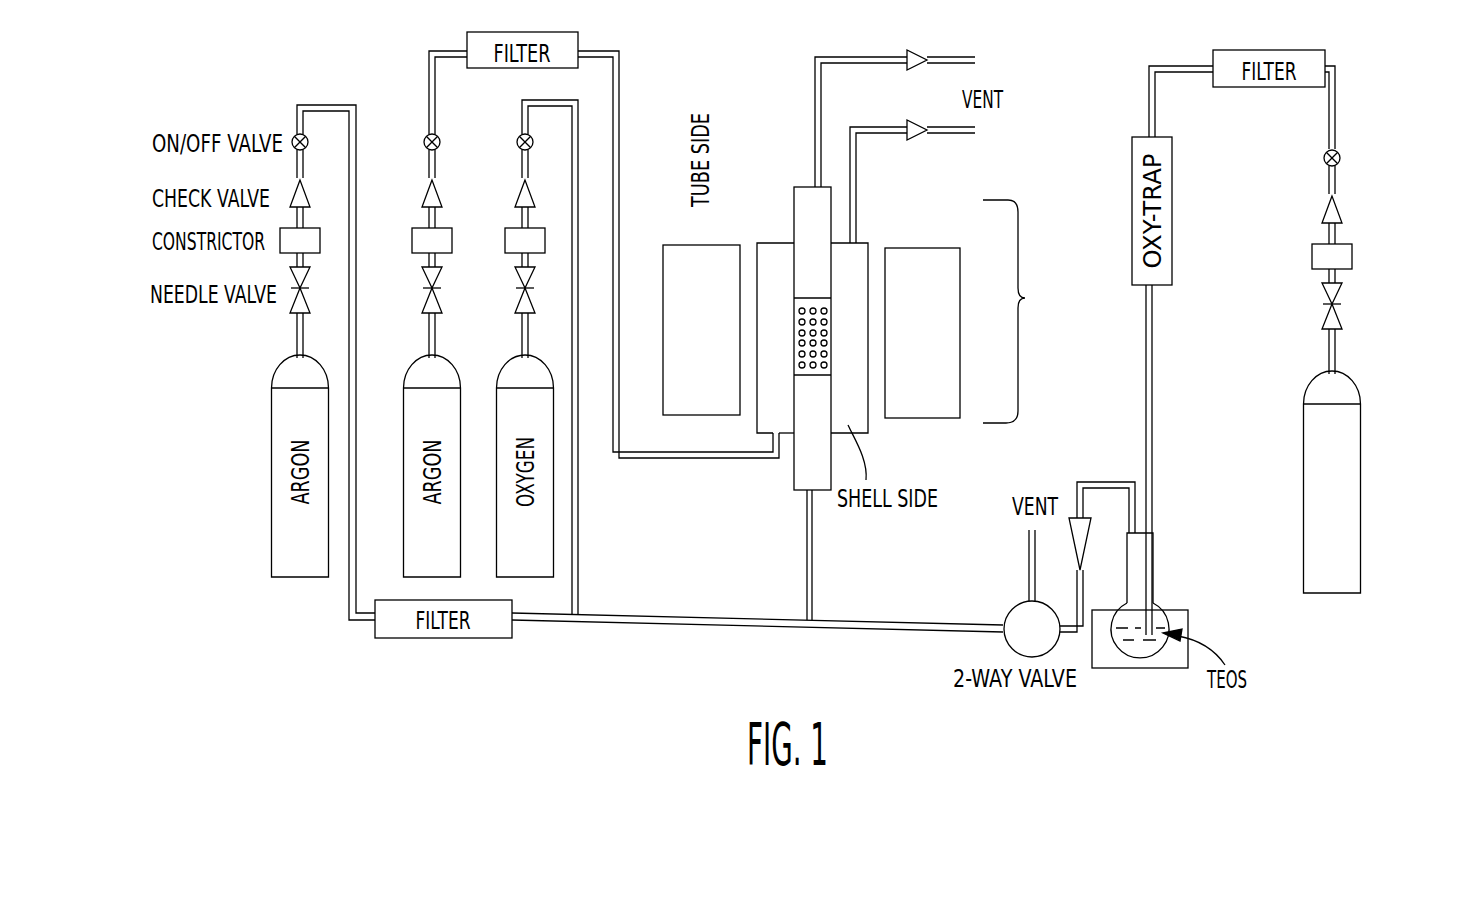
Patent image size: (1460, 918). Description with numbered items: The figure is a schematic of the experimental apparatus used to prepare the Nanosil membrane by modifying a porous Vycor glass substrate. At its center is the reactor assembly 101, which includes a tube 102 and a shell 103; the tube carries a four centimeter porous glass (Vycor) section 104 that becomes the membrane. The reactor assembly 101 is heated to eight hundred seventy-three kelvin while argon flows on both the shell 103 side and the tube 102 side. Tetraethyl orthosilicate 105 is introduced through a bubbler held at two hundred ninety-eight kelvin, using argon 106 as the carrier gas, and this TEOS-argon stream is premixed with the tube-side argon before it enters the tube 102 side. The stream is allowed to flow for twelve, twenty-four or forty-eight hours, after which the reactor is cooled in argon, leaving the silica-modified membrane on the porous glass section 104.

The reactor assembly 101 is at (863, 311).
The tube 102 is at (783, 250).
The shell 103 is at (822, 316).
The porous glass (Vycor) section 104 is at (854, 216).
The tetraethyl orthosilicate 105 is at (1157, 610).
The Ar 106 is at (1357, 481).